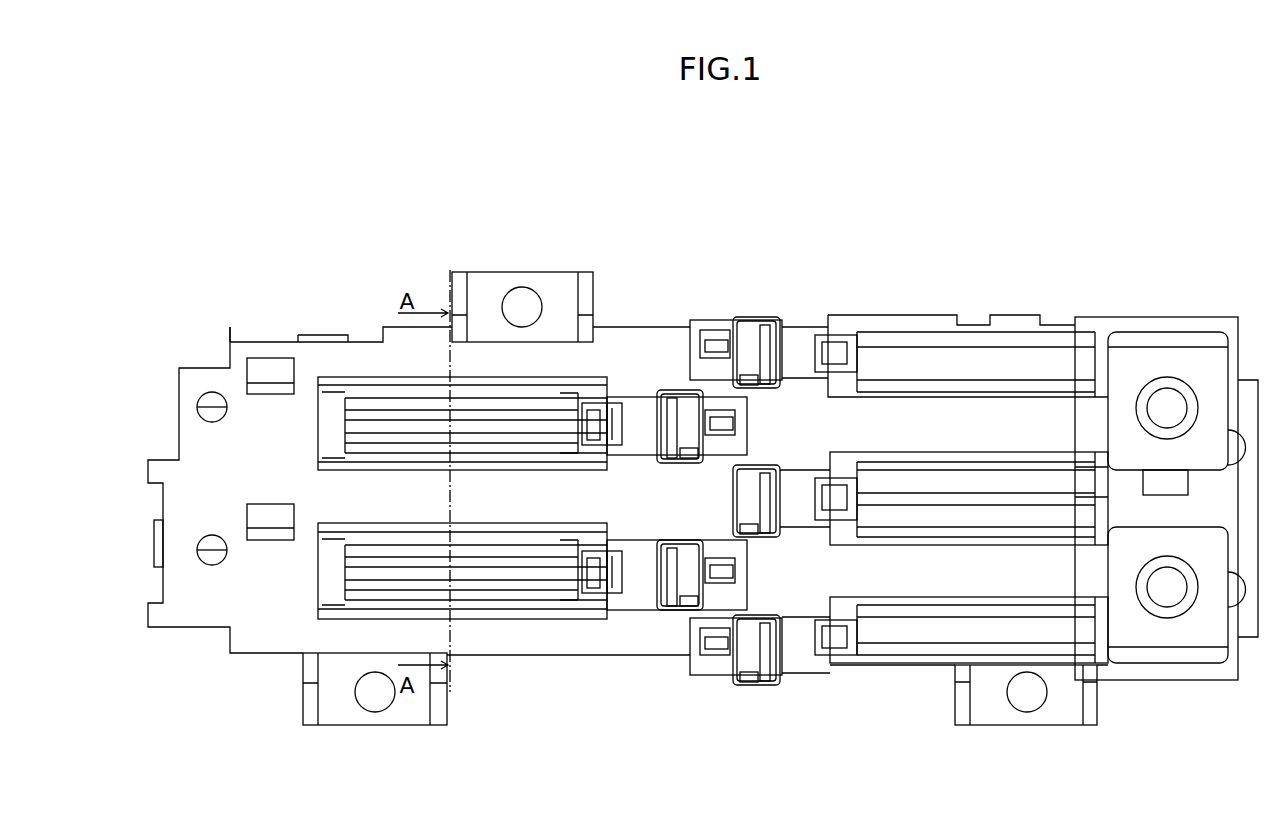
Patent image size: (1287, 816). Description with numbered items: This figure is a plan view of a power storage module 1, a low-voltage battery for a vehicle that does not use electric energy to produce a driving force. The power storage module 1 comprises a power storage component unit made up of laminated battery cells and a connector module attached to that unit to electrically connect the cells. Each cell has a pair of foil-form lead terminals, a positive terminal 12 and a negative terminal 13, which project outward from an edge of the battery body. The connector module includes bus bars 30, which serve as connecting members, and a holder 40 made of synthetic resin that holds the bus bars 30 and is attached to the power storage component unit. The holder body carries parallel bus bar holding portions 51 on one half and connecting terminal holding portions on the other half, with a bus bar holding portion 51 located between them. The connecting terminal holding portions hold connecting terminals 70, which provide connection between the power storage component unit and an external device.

The power storage module 1 is at (1142, 154).
The positive terminal 12 is at (560, 442).
The negative terminal 13 is at (532, 410).
The bus bar 30 is at (477, 427).
The holder 40 is at (262, 633).
The bus bar holding portion 51 is at (514, 512).
The connecting terminal 70 is at (1133, 367).